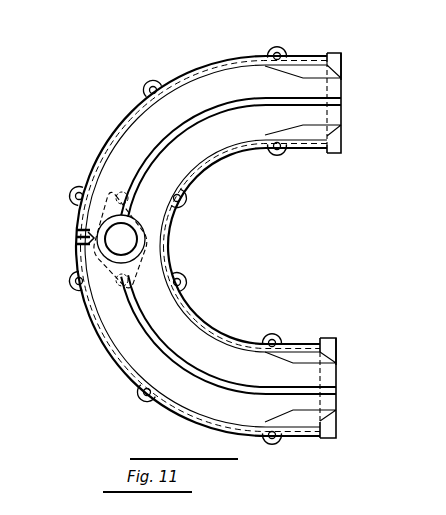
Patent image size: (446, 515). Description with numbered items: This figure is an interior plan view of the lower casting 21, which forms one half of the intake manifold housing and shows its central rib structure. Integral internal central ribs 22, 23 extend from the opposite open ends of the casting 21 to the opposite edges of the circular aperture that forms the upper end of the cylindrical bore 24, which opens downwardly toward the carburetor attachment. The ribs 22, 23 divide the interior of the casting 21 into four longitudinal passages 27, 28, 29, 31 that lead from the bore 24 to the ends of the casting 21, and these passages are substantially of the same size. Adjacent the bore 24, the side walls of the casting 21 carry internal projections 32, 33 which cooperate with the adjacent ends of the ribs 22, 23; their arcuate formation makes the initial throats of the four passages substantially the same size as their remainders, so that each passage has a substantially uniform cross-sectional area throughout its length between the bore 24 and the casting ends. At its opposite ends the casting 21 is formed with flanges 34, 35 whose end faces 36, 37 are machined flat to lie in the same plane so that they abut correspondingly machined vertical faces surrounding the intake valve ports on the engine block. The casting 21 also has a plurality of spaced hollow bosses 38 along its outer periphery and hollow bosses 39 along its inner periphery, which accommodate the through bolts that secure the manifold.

The lower casting 21 is at (233, 56).
The central rib 22 is at (322, 103).
The central rib 23 is at (232, 383).
The cylindrical bore 24 is at (126, 226).
The longitudinal passage 27 is at (204, 84).
The longitudinal passage 28 is at (217, 142).
The longitudinal passage 29 is at (204, 337).
The longitudinal passage 31 is at (212, 408).
The internal projection 32 is at (80, 221).
The internal projection 33 is at (158, 222).
The flange 34 is at (328, 53).
The flange 35 is at (327, 438).
The end face 36 is at (342, 68).
The end face 37 is at (337, 340).
The hollow boss 38 is at (162, 69).
The hollow boss 39 is at (276, 156).